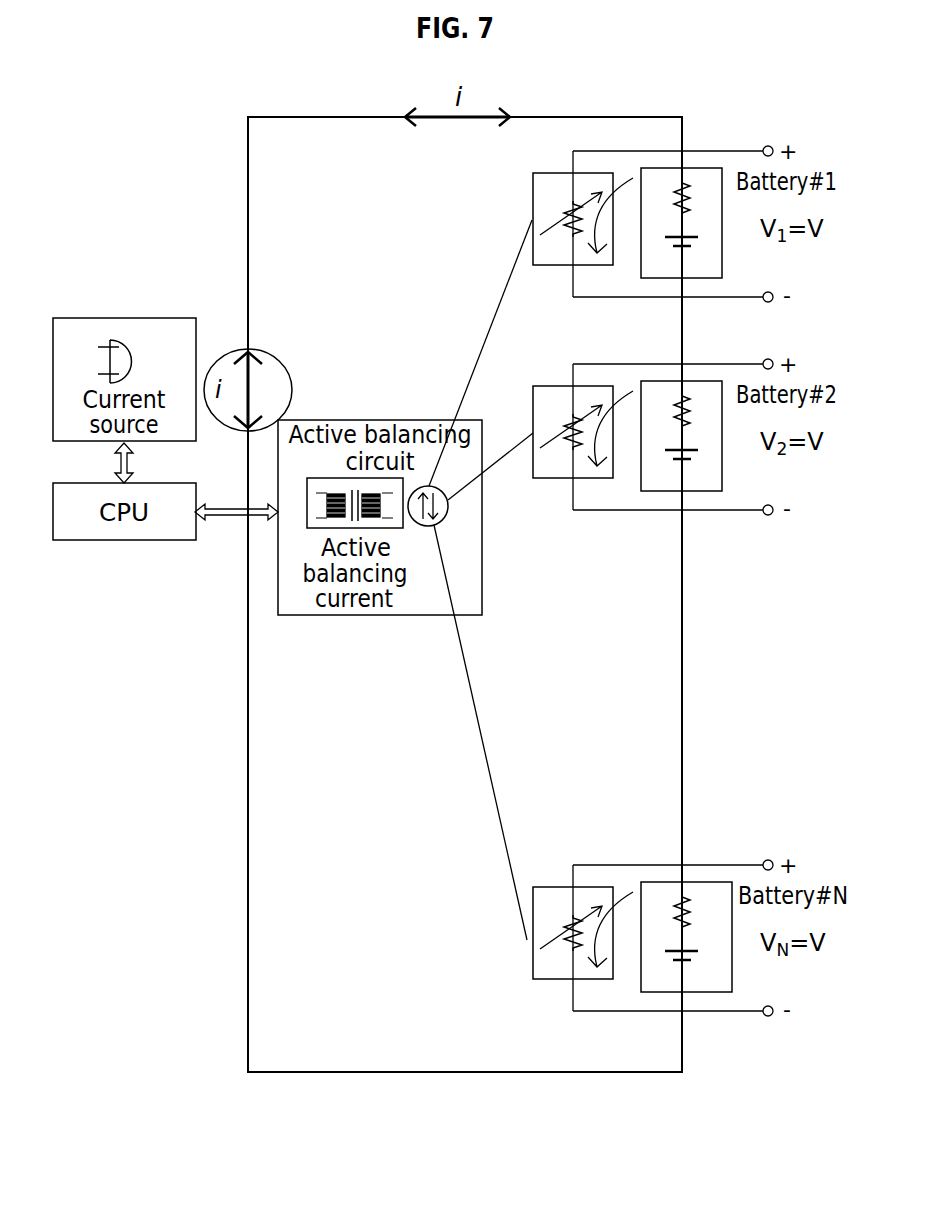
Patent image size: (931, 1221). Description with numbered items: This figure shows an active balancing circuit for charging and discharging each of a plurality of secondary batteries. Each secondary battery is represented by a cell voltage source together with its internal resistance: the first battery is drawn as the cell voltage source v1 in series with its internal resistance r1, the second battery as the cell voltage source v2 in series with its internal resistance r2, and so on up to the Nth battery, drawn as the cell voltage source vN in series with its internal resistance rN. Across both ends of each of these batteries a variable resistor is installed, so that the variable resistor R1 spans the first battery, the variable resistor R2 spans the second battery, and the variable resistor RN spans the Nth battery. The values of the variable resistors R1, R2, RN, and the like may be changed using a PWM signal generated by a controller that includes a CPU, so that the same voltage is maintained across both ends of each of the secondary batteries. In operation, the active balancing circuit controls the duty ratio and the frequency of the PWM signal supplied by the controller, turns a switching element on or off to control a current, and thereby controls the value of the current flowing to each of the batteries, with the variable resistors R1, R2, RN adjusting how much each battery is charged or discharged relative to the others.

The variable resistor R1 is at (583, 219).
The internal resistance of battery #1 r1 is at (694, 194).
The cell voltage source of battery #1 v1 is at (689, 252).
The variable resistor R2 is at (583, 432).
The internal resistance of battery #2 r2 is at (694, 407).
The cell voltage source of battery #2 v2 is at (689, 465).
The variable resistor RN is at (583, 933).
The internal resistance of battery #N rN is at (697, 908).
The cell voltage source of battery #N vN is at (692, 966).